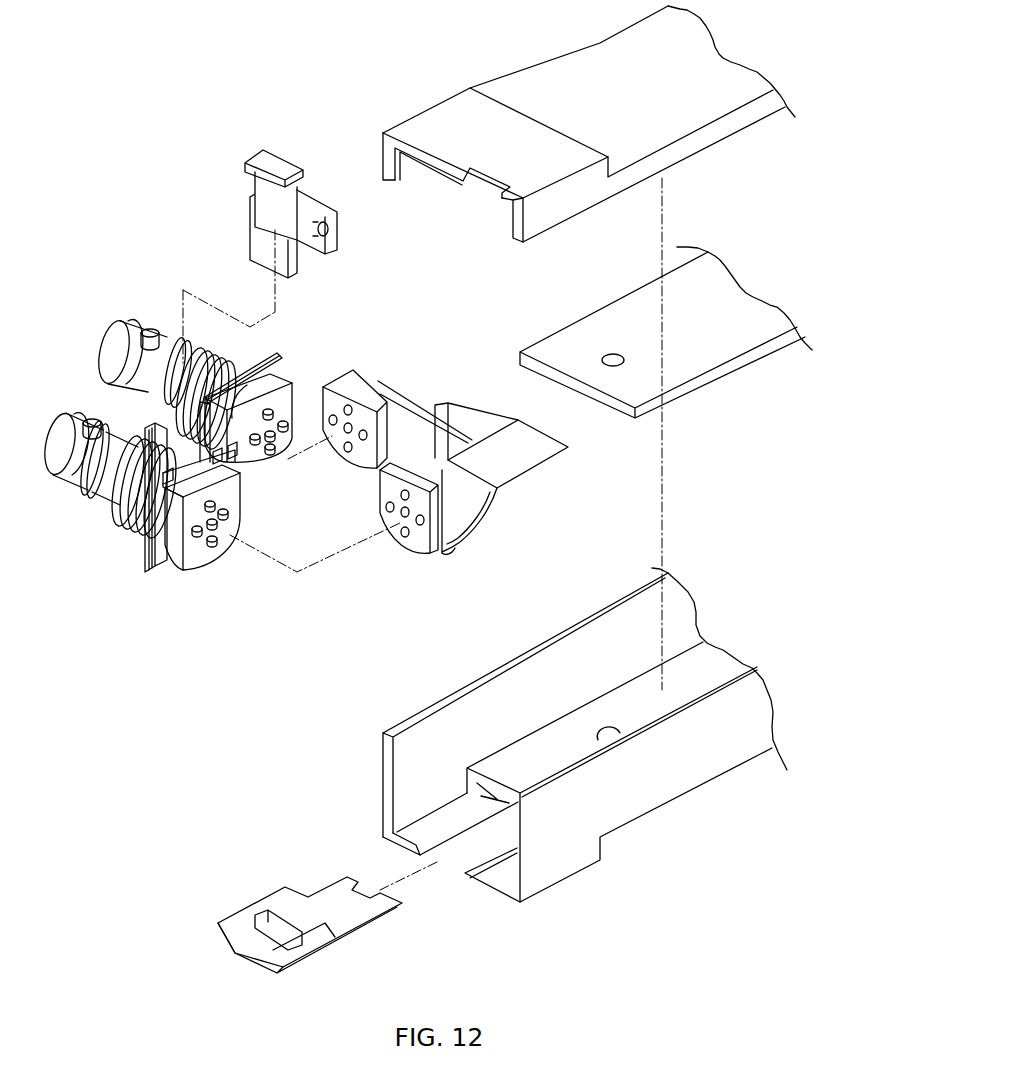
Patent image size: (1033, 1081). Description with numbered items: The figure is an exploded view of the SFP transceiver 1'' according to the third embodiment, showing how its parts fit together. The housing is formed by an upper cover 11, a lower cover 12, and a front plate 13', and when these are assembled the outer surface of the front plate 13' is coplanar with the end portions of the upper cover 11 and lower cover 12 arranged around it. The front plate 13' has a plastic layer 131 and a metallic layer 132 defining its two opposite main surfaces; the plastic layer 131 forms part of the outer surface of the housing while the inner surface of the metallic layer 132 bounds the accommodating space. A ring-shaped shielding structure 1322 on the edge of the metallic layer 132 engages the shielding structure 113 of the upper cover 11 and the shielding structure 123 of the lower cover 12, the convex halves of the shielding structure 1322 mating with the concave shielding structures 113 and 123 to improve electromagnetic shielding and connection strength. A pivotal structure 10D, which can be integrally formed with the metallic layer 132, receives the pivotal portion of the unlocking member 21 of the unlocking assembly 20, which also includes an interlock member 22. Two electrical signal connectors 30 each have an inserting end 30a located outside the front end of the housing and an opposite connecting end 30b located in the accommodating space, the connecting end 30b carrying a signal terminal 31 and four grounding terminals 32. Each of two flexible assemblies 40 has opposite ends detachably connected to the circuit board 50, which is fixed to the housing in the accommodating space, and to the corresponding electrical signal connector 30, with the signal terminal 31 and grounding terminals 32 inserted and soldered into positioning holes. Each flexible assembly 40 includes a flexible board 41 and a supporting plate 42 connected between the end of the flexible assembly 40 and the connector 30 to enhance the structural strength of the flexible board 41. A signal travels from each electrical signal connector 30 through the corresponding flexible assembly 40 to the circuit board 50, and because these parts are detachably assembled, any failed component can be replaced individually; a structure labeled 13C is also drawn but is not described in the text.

The SFP transceiver 1'' is at (418, 362).
The upper cover 11 is at (589, 123).
The shielding structure 113 is at (398, 174).
The lower cover 12 is at (554, 735).
The shielding structure 123 is at (422, 856).
The unlocking assembly 20 is at (203, 792).
The unlocking member 21 is at (242, 213).
The interlock member 22 is at (343, 917).
The electrical signal connector 30 is at (141, 404).
The inserting end 30a is at (105, 333).
The connecting end 30b is at (291, 456).
The signal terminal 31 is at (283, 455).
The grounding terminals 32 is at (261, 491).
The flexible assembly 40 is at (444, 474).
The flexible board 41 is at (522, 460).
The supporting plate 42 is at (417, 542).
The circuit board 50 is at (713, 347).
The plastic layer 131 is at (190, 353).
The metallic layer 132 is at (292, 378).
The ring-shaped shielding structure 1322 is at (279, 352).
The front plate 13' is at (216, 456).
The bracket frame 13C is at (250, 550).
The pivotal structure 10D is at (165, 498).